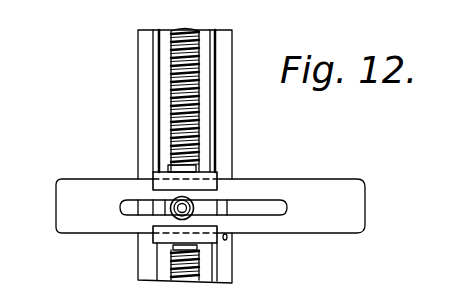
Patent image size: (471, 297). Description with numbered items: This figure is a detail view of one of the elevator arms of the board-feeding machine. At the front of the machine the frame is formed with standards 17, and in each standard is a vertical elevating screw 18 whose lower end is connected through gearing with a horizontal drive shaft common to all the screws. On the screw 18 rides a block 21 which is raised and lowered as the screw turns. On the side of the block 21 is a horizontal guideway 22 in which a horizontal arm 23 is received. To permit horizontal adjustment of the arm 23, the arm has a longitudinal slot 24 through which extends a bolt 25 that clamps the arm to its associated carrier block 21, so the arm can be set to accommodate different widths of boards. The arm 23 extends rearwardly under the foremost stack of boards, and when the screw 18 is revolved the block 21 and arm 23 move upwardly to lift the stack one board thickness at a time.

The standard 17 is at (140, 107).
The vertical elevating screw 18 is at (198, 113).
The block 21 is at (221, 238).
The horizontal guideway 22 is at (198, 190).
The horizontal arm 23 is at (313, 227).
The longitudinal slot 24 is at (275, 198).
The bolt 25 is at (172, 217).